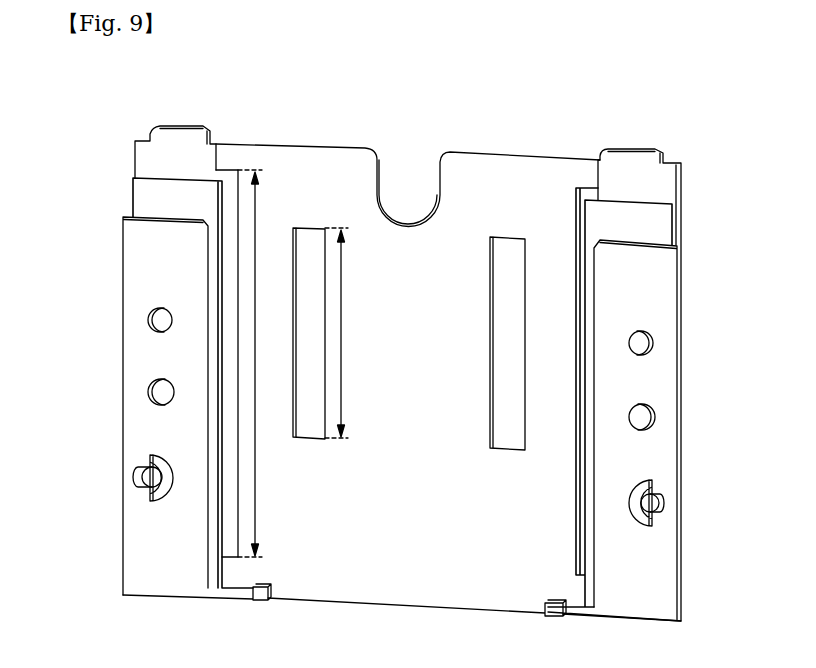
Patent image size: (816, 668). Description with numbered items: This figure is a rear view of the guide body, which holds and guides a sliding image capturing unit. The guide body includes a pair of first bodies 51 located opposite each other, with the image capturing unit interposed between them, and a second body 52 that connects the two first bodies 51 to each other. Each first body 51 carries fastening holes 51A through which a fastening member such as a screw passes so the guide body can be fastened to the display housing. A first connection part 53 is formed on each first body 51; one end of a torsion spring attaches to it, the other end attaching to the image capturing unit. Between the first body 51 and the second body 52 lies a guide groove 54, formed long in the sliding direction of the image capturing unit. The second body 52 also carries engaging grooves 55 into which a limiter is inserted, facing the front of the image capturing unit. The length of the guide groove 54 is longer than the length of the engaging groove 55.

The first body 51 is at (140, 265).
The fastening hole 51A is at (148, 396).
The second body 52 is at (374, 590).
The first connection part 53 is at (140, 480).
The guide groove 54 is at (236, 530).
The engaging groove 55 is at (312, 246).